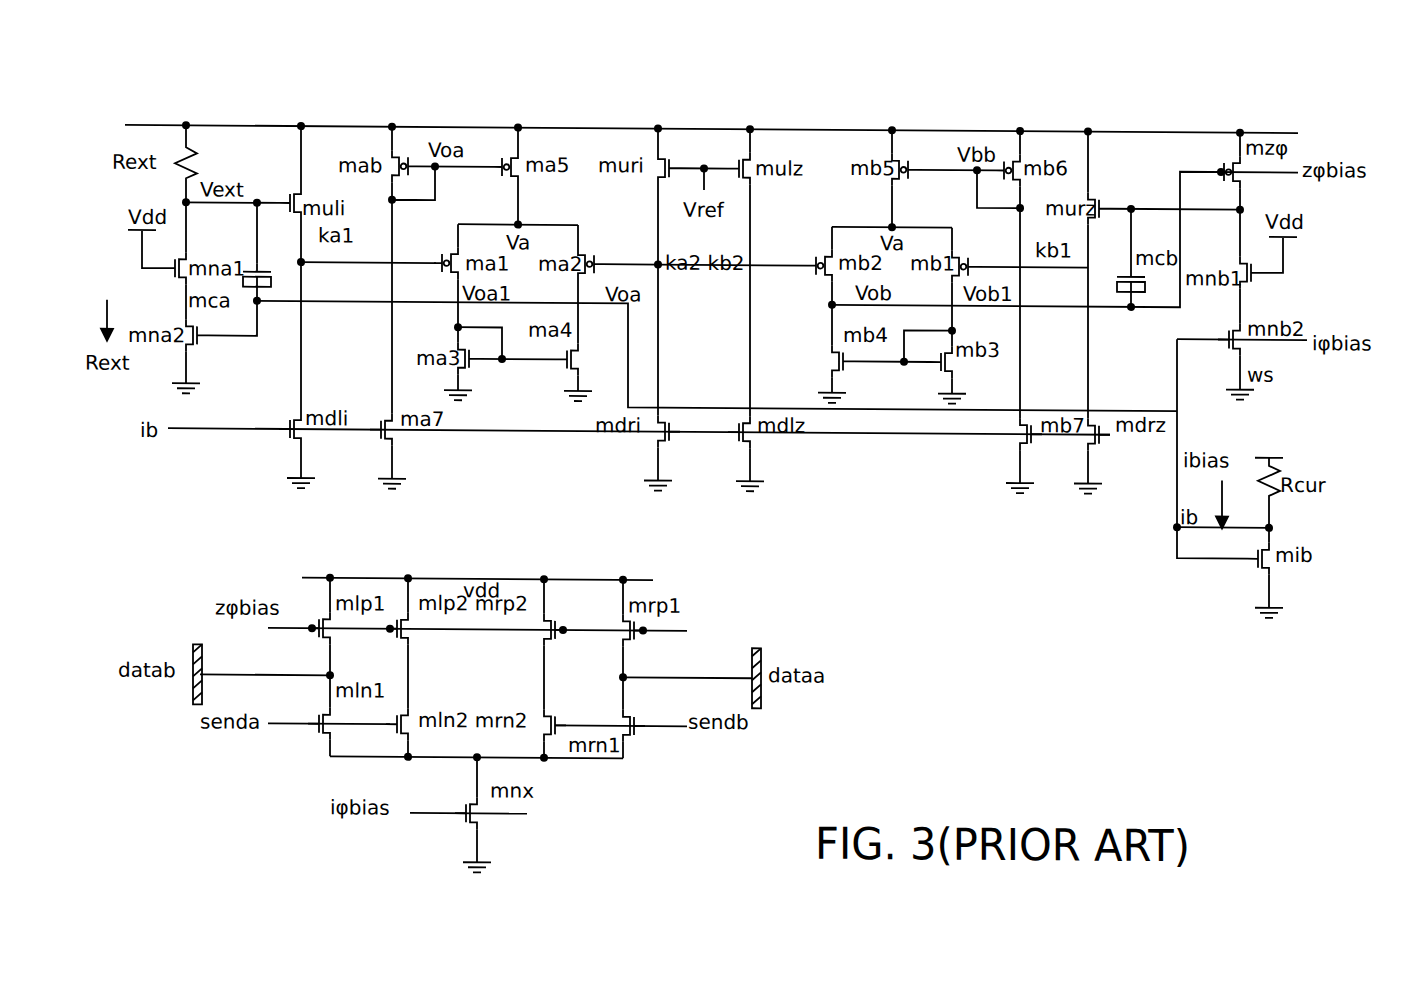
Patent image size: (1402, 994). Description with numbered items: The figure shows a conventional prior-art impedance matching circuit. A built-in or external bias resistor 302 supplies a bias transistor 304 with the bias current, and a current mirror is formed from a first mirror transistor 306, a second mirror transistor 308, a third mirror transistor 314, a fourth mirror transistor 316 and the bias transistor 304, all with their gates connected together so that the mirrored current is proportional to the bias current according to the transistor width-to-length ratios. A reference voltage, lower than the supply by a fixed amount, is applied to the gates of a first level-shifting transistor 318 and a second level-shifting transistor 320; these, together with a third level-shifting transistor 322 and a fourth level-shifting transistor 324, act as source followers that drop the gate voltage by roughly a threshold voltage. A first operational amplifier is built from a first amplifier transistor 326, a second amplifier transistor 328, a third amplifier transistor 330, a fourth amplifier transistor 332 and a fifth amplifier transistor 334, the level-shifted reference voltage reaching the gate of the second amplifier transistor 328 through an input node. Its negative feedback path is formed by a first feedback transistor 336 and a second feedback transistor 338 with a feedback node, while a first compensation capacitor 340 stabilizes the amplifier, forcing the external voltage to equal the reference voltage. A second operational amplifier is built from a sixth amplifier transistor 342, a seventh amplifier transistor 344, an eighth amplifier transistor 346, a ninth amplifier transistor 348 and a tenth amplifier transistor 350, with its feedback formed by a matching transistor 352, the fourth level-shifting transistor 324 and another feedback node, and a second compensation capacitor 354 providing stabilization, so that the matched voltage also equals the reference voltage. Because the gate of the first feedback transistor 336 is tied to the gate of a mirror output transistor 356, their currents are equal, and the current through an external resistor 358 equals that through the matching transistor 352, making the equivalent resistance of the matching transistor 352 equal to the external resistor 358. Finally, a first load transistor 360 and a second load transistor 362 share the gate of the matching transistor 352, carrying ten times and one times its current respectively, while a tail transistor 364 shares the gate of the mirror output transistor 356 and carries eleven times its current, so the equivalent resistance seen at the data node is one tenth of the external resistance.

The bias resistor 302 is at (1276, 490).
The transistor mib 304 is at (1250, 556).
The transistor mdrz 306 is at (1108, 440).
The transistor mb7 308 is at (1040, 445).
The transistor ma7 314 is at (378, 433).
The transistor mdli 316 is at (283, 433).
The transistor muri 318 is at (680, 158).
The transistor mulz 320 is at (736, 158).
The transistor muli 322 is at (282, 192).
The transistor murz 324 is at (1106, 192).
The transistor ma1 326 is at (436, 260).
The transistor ma2 328 is at (598, 254).
The transistor ma3 330 is at (478, 362).
The transistor ma4 332 is at (559, 362).
The transistor ma5 334 is at (496, 158).
The transistor mna2 336 is at (210, 338).
The transistor mna1 338 is at (177, 272).
The capacitor mca 340 is at (272, 279).
The transistor mb1 342 is at (976, 260).
The transistor mb2 344 is at (808, 270).
The transistor mb3 346 is at (930, 375).
The transistor mb4 348 is at (855, 361).
The transistor mb5 350 is at (918, 160).
The transistor mz0 352 is at (1226, 158).
The capacitor mcb 354 is at (1142, 302).
The transistor mnb2 356 is at (1226, 331).
The resistor Rext 358 is at (176, 154).
The transistor mlp1 360 is at (318, 642).
The transistor mlp2 362 is at (418, 642).
The transistor mnx 364 is at (463, 818).